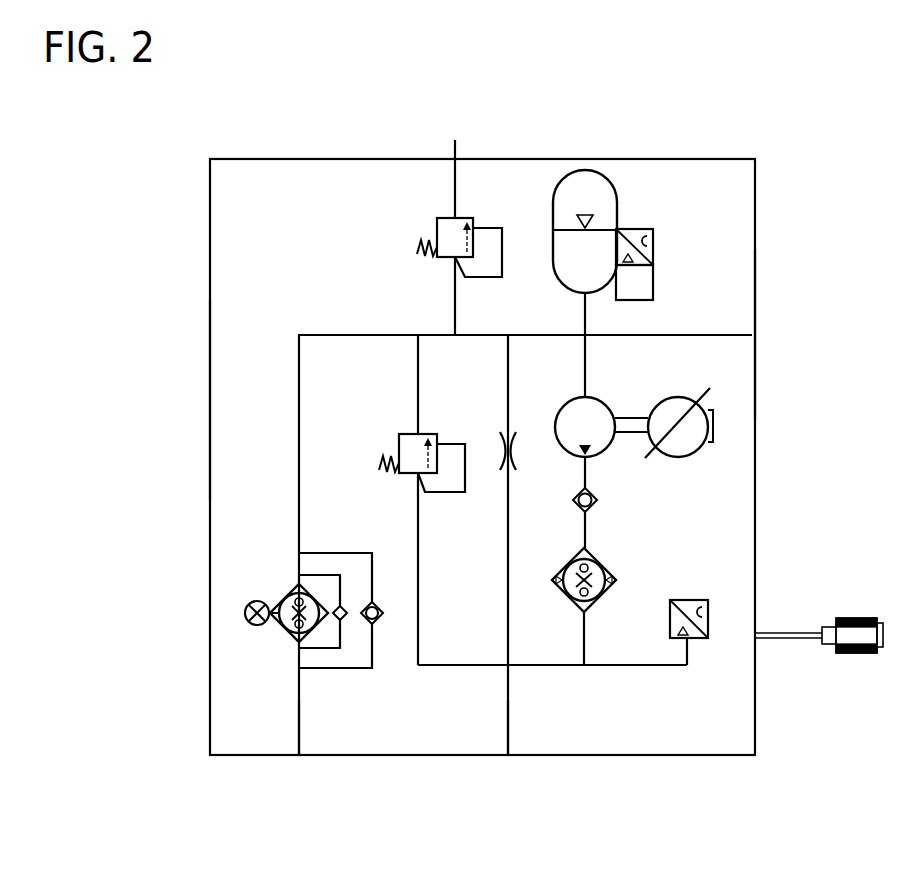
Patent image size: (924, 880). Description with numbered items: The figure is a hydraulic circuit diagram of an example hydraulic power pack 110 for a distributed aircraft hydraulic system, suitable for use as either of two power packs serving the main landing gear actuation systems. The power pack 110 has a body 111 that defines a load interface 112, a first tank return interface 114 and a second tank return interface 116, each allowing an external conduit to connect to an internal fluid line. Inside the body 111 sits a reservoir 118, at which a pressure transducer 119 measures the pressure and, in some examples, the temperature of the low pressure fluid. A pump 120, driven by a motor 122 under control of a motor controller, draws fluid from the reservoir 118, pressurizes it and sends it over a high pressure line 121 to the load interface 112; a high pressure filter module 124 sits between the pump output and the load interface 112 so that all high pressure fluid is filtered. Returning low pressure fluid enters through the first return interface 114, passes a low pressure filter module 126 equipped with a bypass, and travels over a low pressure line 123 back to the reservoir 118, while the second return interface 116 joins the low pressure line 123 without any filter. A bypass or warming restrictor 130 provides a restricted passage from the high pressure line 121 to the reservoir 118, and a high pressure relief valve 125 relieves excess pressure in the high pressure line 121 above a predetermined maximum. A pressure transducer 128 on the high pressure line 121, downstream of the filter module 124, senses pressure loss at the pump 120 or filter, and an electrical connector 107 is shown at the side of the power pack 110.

The electrical connector 107 is at (858, 655).
The hydraulic power pack 110 is at (645, 152).
The body 111 is at (210, 398).
The load interface 112 is at (507, 758).
The first tank return interface 114 is at (297, 760).
The second tank return interface 116 is at (755, 335).
The reservoir 118 is at (576, 170).
The pressure transducer 119 is at (653, 252).
The pump 120 is at (607, 450).
The high pressure line 121 is at (543, 670).
The motor 122 is at (690, 453).
The low pressure line 123 is at (330, 333).
The high pressure filter module 124 is at (600, 598).
The high pressure relief valve 125 is at (398, 433).
The low pressure filter module 126 is at (283, 595).
The pressure transducer 128 is at (695, 640).
The bypass or warming restrictor 130 is at (505, 432).